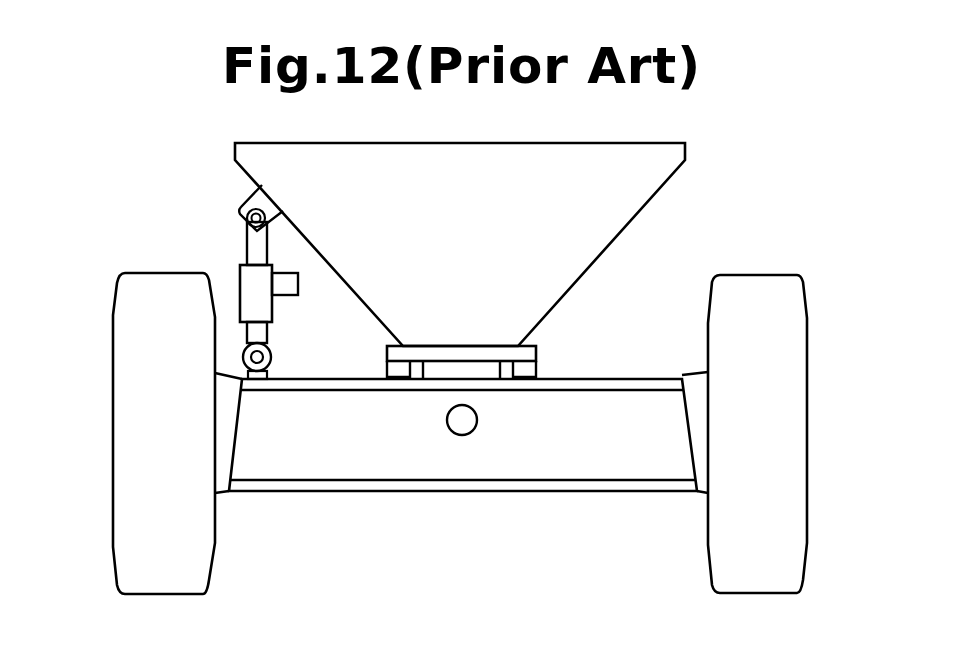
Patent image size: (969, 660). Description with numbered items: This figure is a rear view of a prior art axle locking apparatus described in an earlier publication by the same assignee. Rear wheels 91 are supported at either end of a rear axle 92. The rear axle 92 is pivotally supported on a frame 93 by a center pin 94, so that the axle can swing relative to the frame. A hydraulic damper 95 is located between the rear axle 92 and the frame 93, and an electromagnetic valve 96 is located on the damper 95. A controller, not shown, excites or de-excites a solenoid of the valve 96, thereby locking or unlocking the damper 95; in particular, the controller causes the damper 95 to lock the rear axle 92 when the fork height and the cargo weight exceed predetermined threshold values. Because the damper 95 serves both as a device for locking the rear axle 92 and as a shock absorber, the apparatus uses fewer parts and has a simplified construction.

The rear wheels 91 is at (113, 497).
The rear axle 92 is at (627, 378).
The frame 93 is at (621, 229).
The center pin 94 is at (476, 427).
The hydraulic damper 95 is at (236, 280).
The electromagnetic valve 96 is at (300, 285).